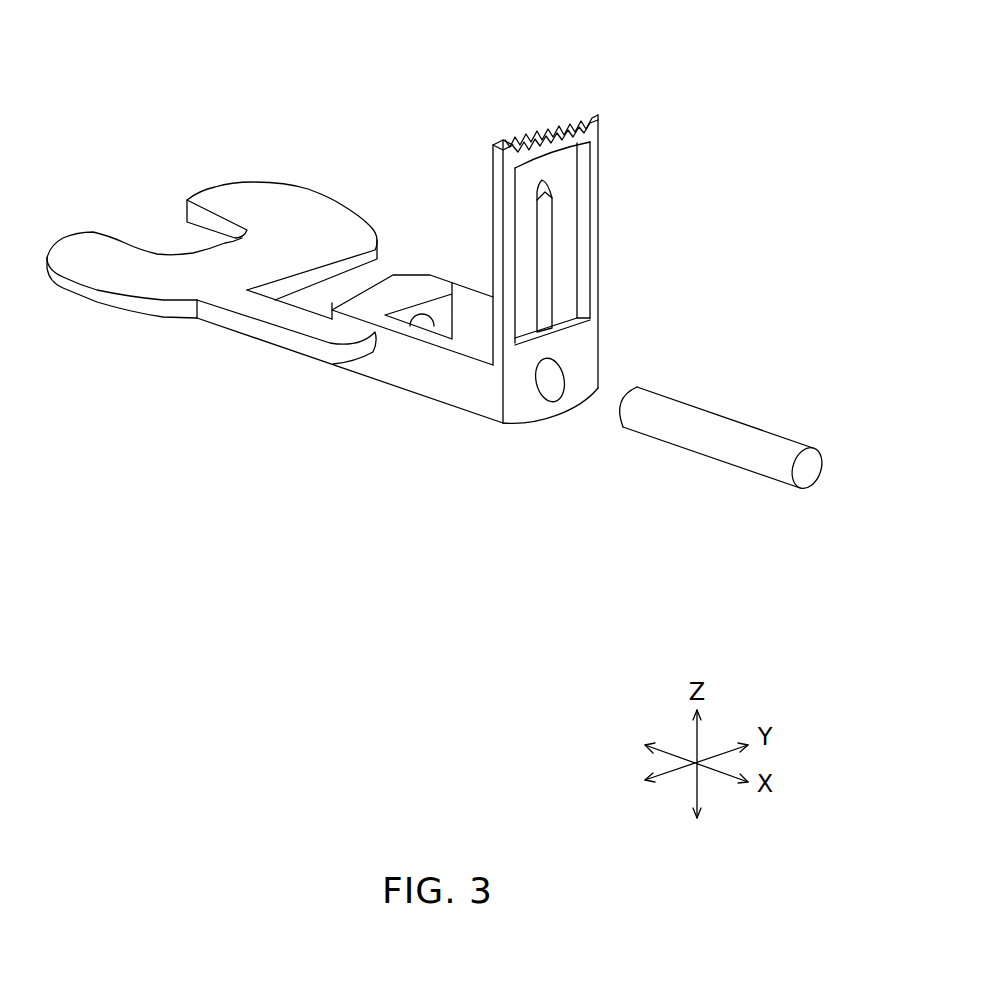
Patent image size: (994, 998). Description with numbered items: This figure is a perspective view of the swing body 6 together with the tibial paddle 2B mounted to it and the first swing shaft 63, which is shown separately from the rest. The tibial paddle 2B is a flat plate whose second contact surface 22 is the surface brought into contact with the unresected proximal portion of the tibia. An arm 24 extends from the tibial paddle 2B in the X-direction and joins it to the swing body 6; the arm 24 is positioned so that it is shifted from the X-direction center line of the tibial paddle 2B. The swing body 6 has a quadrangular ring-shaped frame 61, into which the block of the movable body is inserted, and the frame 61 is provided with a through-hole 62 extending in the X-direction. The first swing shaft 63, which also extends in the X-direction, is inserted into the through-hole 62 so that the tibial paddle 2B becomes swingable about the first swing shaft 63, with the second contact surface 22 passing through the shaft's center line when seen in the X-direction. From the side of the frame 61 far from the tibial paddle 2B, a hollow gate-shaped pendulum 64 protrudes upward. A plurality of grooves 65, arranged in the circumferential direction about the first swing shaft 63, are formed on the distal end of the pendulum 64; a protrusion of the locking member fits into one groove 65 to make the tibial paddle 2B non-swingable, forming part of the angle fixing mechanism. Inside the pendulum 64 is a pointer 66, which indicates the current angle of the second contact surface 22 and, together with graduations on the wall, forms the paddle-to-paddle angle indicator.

The tibial paddle 2B is at (212, 258).
The second contact surface 22 is at (137, 318).
The arm 24 is at (265, 328).
The swing body 6 is at (475, 274).
The frame 61 is at (403, 372).
The through-hole 62 is at (552, 383).
The first swing shaft 63 is at (727, 447).
The pendulum 64 is at (570, 274).
The grooves 65 is at (537, 108).
The pointer 66 is at (557, 220).